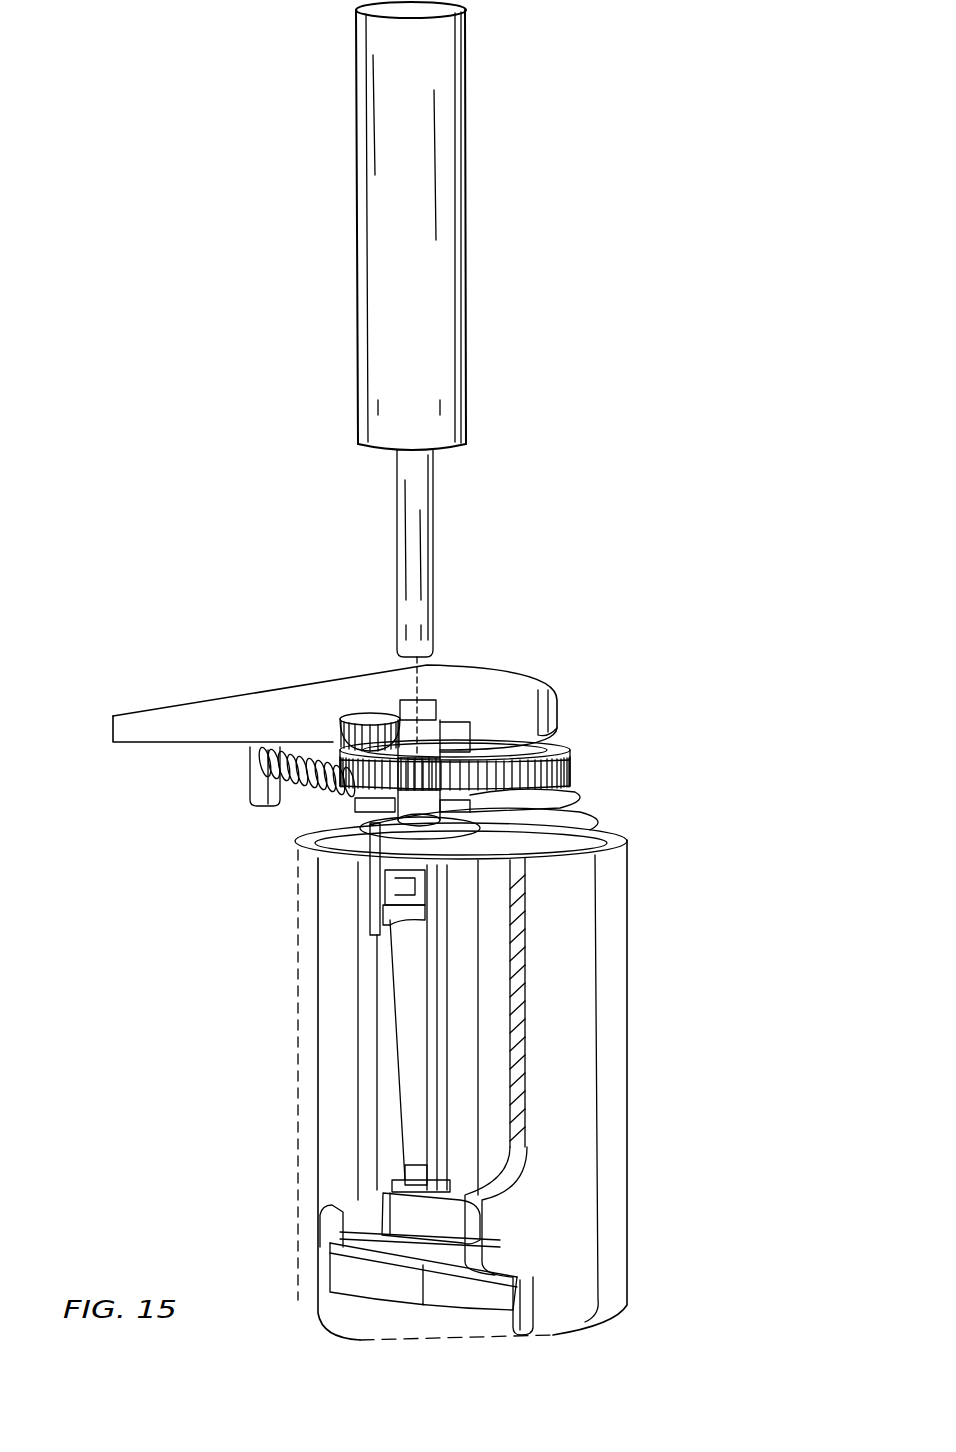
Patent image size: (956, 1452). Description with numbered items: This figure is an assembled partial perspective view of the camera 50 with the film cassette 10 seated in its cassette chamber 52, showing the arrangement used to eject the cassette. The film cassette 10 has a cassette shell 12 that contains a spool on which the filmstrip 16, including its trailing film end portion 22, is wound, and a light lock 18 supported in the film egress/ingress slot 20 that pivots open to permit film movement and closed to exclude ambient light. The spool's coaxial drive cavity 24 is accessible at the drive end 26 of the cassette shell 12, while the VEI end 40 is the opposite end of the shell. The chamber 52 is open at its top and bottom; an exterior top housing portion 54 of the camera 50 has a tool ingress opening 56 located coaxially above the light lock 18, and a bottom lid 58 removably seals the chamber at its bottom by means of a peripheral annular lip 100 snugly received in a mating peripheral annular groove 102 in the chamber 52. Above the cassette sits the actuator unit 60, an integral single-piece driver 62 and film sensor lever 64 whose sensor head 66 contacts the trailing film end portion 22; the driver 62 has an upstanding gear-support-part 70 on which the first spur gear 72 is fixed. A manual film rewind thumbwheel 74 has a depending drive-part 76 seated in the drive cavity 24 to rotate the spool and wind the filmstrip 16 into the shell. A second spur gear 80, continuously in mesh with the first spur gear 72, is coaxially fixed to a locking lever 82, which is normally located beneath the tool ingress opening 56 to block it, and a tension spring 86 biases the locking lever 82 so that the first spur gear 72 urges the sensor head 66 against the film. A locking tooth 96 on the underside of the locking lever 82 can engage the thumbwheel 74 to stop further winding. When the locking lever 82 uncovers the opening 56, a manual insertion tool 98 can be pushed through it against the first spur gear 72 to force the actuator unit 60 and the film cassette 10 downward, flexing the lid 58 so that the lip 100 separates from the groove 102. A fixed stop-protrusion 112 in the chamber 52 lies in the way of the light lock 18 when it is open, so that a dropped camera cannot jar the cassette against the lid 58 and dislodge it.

The film cassette 10 is at (497, 1060).
The cassette shell 12 is at (498, 1105).
The filmstrip 16 is at (397, 1087).
The light lock 18 is at (400, 1177).
The film egress/ingress slot 20 is at (400, 1173).
The trailing film end portion 22 is at (407, 1045).
The drive cavity 24 is at (566, 804).
The drive end 26 is at (613, 833).
The VEI end 40 is at (353, 1218).
The camera 50 is at (592, 707).
The cassette chamber 52 is at (503, 1140).
The top housing portion 54 is at (372, 665).
The tool ingress opening 56 is at (427, 722).
The bottom lid 58 is at (380, 1280).
The actuator unit 60 is at (375, 815).
The driver 62 is at (360, 855).
The film sensor lever 64 is at (367, 882).
The sensor head 66 is at (417, 905).
The gear-support-part 70 is at (470, 805).
The first spur gear 72 is at (418, 745).
The manual film rewind thumbwheel 74 is at (572, 757).
The drive-part 76 is at (548, 790).
The second spur gear 80 is at (365, 752).
The locking lever 82 is at (427, 745).
The tension spring 86 is at (262, 796).
The locking tooth 96 is at (330, 713).
The manual insertion tool 98 is at (428, 515).
The peripheral annular lip 100 is at (367, 1268).
The peripheral annular groove 102 is at (355, 1250).
The stop-protrusion 112 is at (450, 1222).